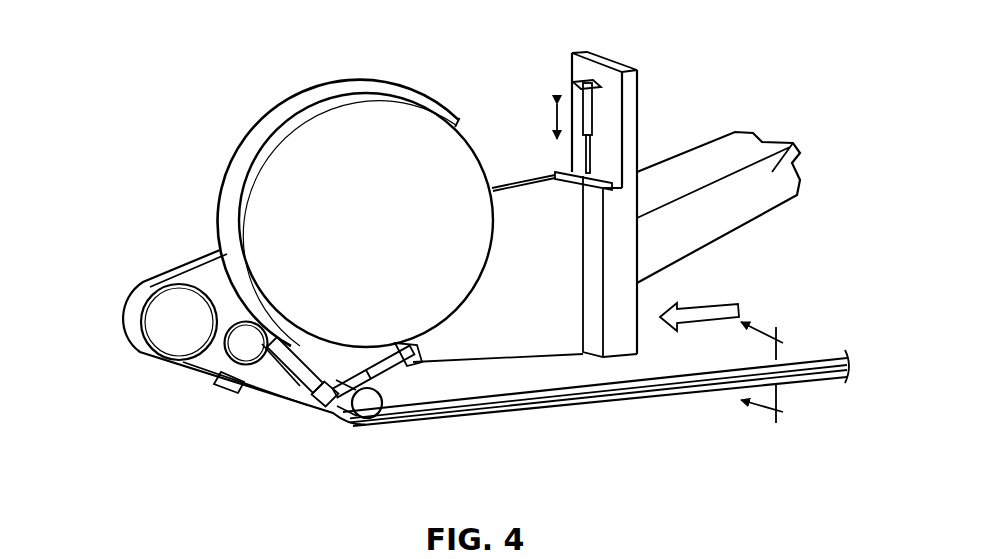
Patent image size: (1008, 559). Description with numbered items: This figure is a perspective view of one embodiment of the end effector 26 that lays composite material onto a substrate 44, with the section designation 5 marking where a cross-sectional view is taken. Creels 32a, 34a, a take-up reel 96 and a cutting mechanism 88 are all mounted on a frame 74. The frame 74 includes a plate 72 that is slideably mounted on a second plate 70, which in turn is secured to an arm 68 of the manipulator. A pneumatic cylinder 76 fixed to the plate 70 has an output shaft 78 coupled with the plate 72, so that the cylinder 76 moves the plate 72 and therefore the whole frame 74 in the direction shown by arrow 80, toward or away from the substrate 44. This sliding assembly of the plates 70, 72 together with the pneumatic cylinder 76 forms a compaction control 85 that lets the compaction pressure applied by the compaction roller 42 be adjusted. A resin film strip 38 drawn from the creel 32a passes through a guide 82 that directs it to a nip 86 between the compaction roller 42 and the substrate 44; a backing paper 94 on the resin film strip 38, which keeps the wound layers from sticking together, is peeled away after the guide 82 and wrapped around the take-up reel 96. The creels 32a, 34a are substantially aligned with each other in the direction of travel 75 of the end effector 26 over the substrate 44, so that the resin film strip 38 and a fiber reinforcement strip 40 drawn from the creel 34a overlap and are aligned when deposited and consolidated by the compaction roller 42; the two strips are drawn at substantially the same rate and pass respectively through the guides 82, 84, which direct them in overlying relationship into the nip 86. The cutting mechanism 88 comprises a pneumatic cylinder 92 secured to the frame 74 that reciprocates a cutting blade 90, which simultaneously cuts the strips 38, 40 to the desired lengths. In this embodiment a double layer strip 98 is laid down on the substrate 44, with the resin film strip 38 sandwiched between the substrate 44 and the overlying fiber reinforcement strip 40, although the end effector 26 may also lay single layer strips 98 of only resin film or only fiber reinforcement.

The end effector 26 is at (198, 84).
The creel 32a is at (170, 313).
The creel 34a is at (300, 160).
The resin film strip 38 is at (134, 316).
The fiber reinforcement strip 40 is at (237, 184).
The compaction roller 42 is at (368, 408).
The substrate 44 is at (817, 350).
The section line 5- 5 is at (773, 375).
The arm 68 is at (795, 157).
The second plate 70 is at (627, 90).
The plate 72 is at (595, 325).
The frame 74 is at (522, 334).
The direction of travel 75 is at (707, 303).
The pneumatic cylinder 76 is at (588, 105).
The output shaft 78 is at (588, 157).
The arrow 80 is at (550, 115).
The guide 82 is at (257, 393).
The guide 84 is at (310, 379).
The compaction control 85 is at (560, 65).
The nip 86 is at (356, 436).
The cutting mechanism 88 is at (388, 392).
The cutting blade 90 is at (340, 404).
The pneumatic cylinder 92 is at (406, 367).
The backing paper 94 is at (287, 376).
The take-up reel 96 is at (245, 338).
The double layer strip 98 is at (690, 393).